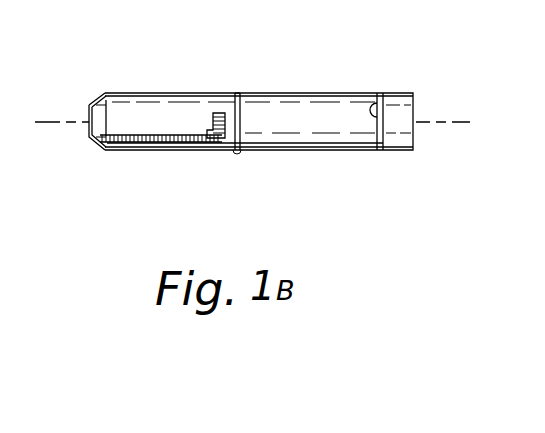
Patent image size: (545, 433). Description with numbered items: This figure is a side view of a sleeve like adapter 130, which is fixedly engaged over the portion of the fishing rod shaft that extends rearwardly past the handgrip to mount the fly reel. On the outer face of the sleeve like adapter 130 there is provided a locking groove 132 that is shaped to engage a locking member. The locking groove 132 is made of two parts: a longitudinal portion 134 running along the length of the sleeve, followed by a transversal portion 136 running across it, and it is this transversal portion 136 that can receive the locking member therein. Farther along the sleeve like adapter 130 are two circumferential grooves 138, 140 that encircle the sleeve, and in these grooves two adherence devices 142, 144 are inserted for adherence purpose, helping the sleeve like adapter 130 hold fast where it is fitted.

The sleeve like adapter 130 is at (325, 182).
The locking groove 132 is at (155, 151).
The longitudinal portion 134 is at (147, 135).
The transversal portion 136 is at (220, 112).
The circumferential groove 138 is at (238, 145).
The circumferential groove 140 is at (412, 93).
The adherence device 142 is at (238, 93).
The adherence device 144 is at (383, 93).